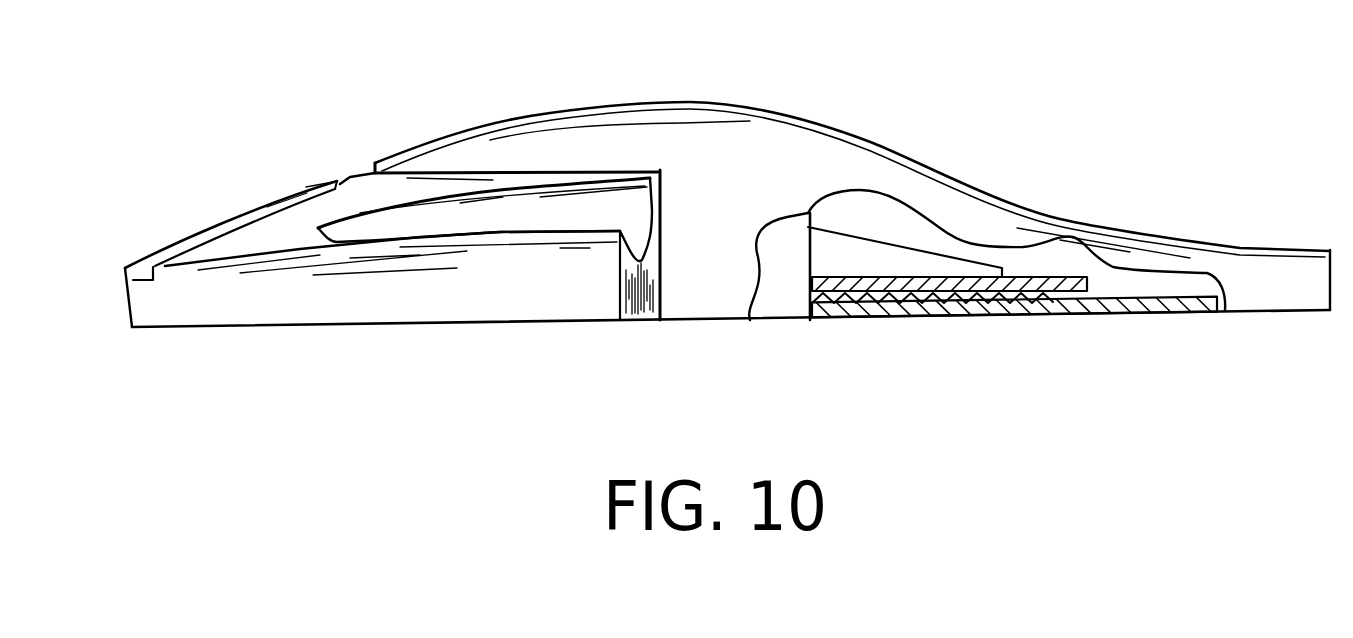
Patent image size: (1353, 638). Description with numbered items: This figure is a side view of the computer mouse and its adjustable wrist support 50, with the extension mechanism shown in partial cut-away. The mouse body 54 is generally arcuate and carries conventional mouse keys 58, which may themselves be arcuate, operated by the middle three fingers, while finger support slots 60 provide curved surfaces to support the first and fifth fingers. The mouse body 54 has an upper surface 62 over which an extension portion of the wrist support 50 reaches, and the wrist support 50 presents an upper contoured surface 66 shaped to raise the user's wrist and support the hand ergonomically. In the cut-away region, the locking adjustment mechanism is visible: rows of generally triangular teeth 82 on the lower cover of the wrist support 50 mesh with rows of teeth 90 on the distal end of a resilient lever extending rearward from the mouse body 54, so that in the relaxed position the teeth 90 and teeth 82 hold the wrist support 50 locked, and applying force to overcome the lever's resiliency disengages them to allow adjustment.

The wrist support 50 is at (962, 168).
The mouse body 54 is at (530, 311).
The mouse keys 58 is at (228, 210).
The finger support slots 60 is at (567, 220).
The upper surface 62 is at (351, 174).
The upper contoured surface 66 is at (760, 191).
The teeth 82 is at (893, 320).
The teeth 90 is at (1025, 293).